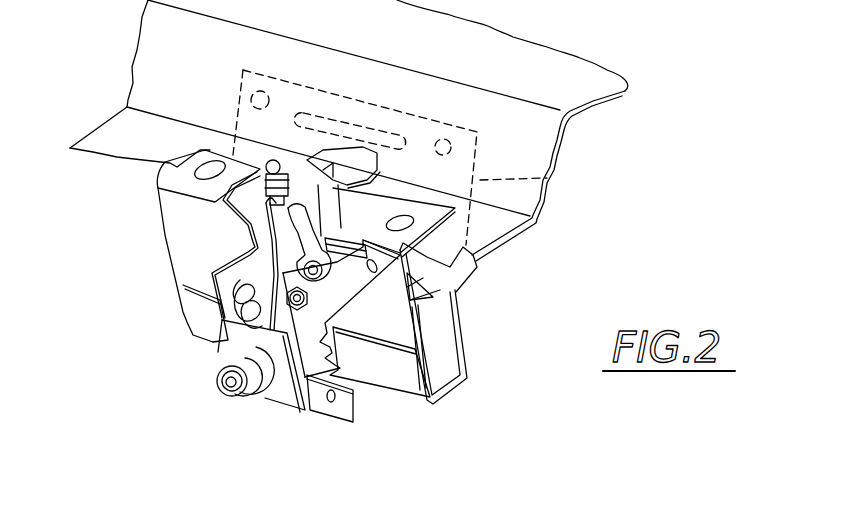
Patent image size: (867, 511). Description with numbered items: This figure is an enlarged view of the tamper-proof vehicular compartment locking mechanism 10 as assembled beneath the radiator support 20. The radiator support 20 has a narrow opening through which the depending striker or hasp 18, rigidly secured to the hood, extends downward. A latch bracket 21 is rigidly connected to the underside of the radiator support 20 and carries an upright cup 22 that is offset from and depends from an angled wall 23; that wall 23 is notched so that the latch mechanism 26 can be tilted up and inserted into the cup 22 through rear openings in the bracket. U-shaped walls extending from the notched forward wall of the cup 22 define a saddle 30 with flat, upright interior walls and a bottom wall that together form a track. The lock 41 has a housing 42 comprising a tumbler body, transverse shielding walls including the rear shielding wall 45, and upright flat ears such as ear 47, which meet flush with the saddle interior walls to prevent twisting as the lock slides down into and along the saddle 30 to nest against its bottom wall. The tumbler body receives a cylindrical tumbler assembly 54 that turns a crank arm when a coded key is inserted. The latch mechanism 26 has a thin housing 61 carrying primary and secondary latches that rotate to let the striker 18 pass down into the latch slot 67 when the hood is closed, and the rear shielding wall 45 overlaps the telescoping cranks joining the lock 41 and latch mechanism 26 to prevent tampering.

The tamper-proof vehicular compartment locking mechanism 10 is at (140, 316).
The striker or hasp 18 is at (343, 210).
The radiator support 20 is at (567, 134).
The latch bracket 21 is at (452, 340).
The cup 22 is at (466, 257).
The wall 23 is at (547, 178).
The latch mechanism 26 is at (270, 219).
The saddle 30 is at (307, 323).
The lock 41 is at (270, 393).
The housing 42 is at (257, 347).
The shielding wall 45 is at (293, 418).
The ear 47 is at (250, 313).
The cylindrical tumbler assembly 54 is at (260, 397).
The housing 61 is at (287, 243).
The latch slot 67 is at (303, 212).